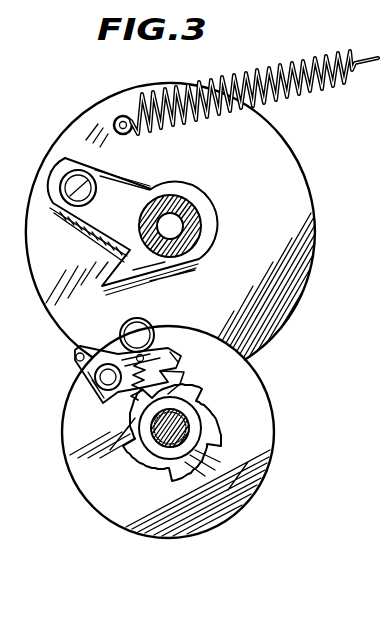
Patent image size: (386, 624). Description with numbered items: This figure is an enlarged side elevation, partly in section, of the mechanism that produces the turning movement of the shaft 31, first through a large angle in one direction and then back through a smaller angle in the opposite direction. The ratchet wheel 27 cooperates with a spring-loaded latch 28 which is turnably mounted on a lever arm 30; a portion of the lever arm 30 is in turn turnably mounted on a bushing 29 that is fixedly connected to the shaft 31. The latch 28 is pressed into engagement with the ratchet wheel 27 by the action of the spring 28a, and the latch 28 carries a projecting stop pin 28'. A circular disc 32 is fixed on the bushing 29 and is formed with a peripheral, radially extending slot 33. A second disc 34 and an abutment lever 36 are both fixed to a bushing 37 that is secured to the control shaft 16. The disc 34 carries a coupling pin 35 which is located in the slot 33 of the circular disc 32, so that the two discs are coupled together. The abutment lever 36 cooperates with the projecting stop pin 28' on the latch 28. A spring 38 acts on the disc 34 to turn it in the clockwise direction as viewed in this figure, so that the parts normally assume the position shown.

The control shaft 16 is at (127, 277).
The ratchet wheel 27 is at (218, 437).
The latch 28 is at (103, 381).
The stop pin 28' is at (54, 346).
The spring 28a is at (108, 400).
The bushing 29 is at (132, 468).
The lever arm 30 is at (84, 394).
The shaft 31 is at (176, 388).
The circular disc 32 is at (74, 464).
The slot 33 is at (152, 334).
The disc 34 is at (301, 282).
The coupling pin 35 is at (126, 328).
The abutment lever 36 is at (213, 244).
The bushing 37 is at (189, 208).
The spring 38 is at (301, 92).